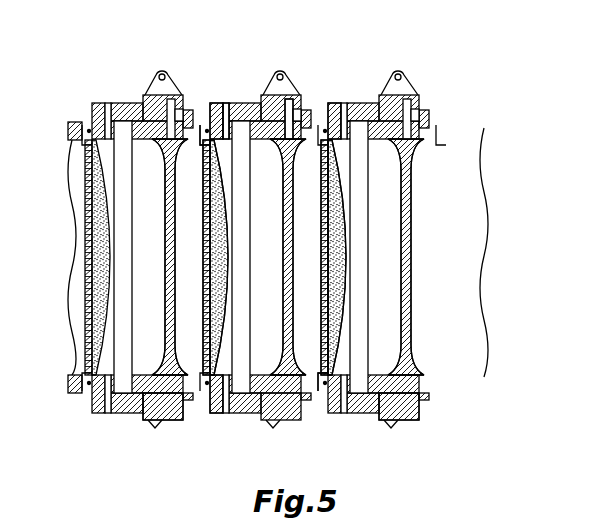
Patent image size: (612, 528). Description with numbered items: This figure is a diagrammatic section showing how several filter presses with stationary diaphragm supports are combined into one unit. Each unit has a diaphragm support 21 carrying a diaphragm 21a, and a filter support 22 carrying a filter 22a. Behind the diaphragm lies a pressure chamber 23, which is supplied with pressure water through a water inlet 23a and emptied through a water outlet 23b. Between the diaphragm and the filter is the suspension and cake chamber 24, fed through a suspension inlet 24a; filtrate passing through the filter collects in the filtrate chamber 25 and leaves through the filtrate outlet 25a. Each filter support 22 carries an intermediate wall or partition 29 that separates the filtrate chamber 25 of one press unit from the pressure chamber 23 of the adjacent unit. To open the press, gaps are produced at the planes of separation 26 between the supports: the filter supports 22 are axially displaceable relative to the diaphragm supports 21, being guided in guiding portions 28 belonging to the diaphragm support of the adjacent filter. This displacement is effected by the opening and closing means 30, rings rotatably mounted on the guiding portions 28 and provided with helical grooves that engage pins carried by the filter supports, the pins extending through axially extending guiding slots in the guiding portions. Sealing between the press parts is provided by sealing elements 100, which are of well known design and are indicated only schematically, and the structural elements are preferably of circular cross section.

The diaphragm 21a is at (160, 116).
The suspension inlet 24a is at (198, 112).
The water inlet 23a is at (228, 103).
The opening and closing means 30 is at (283, 97).
The diaphragm support 21 is at (214, 103).
The filter support 22 is at (328, 128).
The plane of separation 26 is at (445, 127).
The filtrate chamber 25 is at (177, 257).
The pressure chamber 23 is at (281, 257).
The suspension and cake chamber 24 is at (338, 208).
The partition 29 is at (407, 247).
The filter 22a is at (323, 291).
The sealing elements 100 is at (154, 427).
The water outlet 23b is at (225, 410).
The filtrate outlet 25a is at (319, 408).
The guiding portion 28 is at (392, 422).